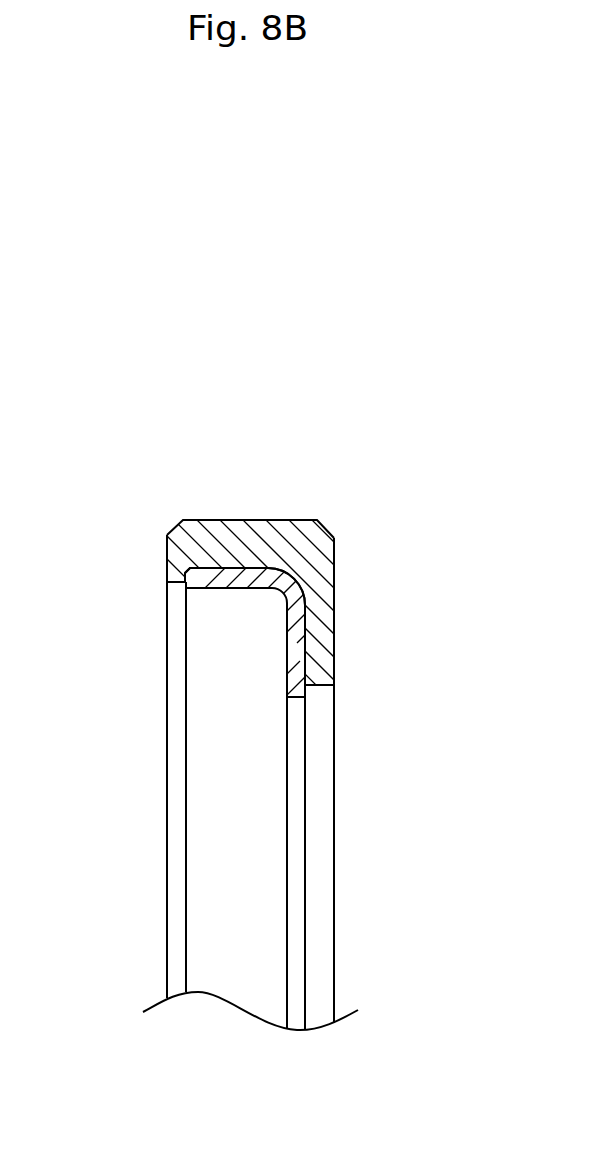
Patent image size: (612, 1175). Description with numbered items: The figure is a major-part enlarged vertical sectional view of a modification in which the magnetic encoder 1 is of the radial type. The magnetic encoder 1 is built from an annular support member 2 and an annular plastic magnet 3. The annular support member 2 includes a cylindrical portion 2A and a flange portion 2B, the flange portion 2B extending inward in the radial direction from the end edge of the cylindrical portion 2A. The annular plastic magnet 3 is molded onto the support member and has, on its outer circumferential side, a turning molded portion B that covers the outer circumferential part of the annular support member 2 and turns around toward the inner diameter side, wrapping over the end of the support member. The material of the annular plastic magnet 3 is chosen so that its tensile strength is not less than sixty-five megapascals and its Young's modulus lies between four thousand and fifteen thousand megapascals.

The magnetic encoder 1 is at (323, 490).
The annular support member 2 is at (75, 623).
The cylindrical portion 2A is at (232, 590).
The flange portion 2B is at (287, 667).
The annular plastic magnet 3 is at (337, 623).
The turning molded portion B is at (210, 515).